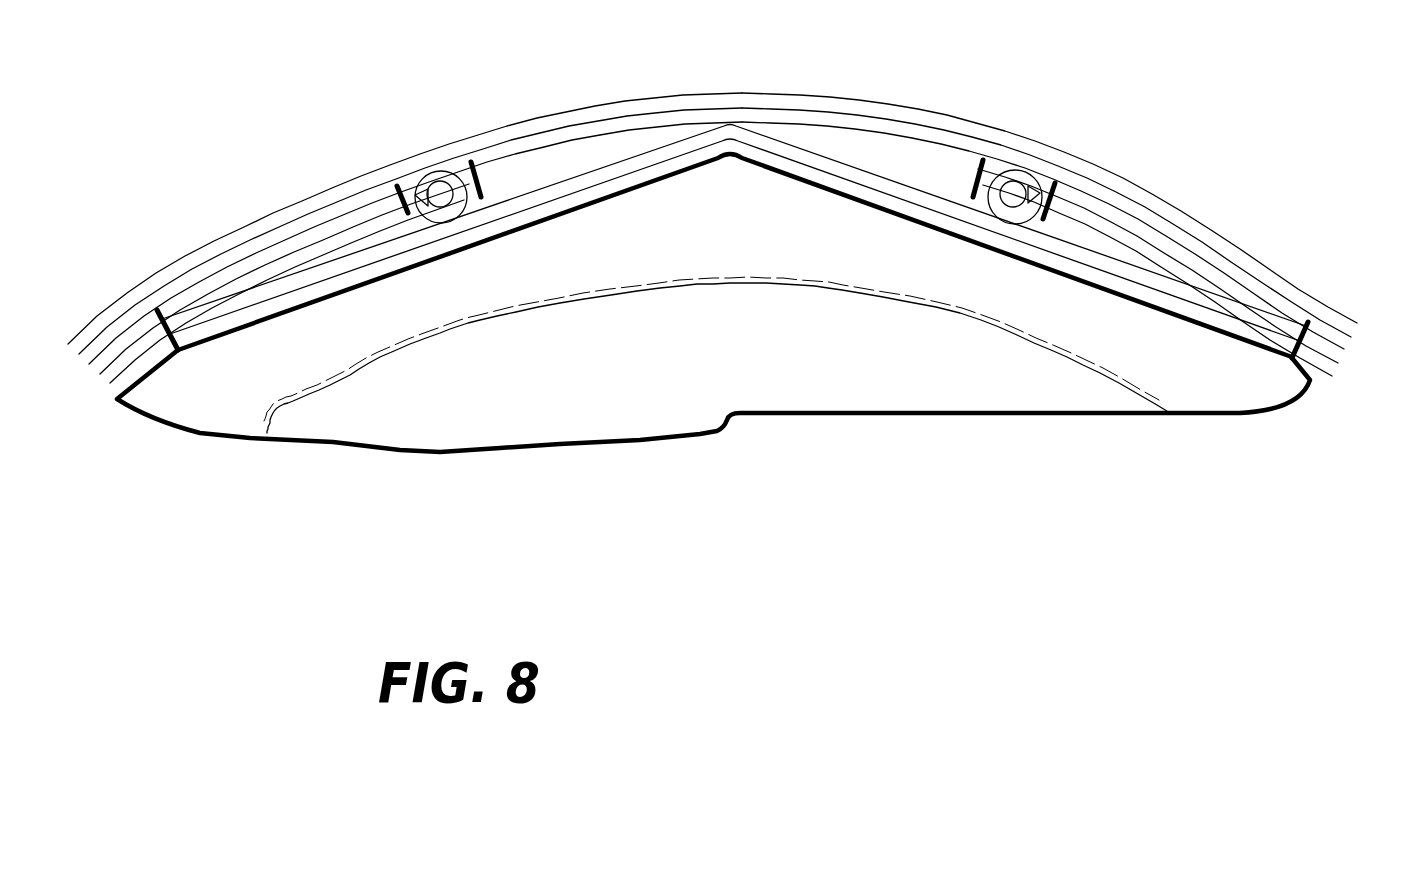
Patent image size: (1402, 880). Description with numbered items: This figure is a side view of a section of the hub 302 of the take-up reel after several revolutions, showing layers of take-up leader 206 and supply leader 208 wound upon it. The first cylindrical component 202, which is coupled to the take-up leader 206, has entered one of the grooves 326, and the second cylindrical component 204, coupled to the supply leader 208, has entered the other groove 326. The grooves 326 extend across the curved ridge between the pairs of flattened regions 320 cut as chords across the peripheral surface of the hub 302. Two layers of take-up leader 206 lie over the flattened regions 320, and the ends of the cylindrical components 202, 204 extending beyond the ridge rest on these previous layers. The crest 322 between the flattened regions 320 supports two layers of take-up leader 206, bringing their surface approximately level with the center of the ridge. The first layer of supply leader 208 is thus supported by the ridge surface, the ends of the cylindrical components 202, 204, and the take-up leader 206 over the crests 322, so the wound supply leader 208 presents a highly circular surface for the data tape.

The first cylindrical component 202 is at (1013, 194).
The second cylindrical component 204 is at (440, 194).
The take-up leader 206 is at (1193, 277).
The supply leader 208 is at (337, 240).
The hub 302 is at (770, 458).
The flattened regions 320 is at (327, 293).
The crest 322 is at (730, 156).
The grooves 326 is at (490, 168).